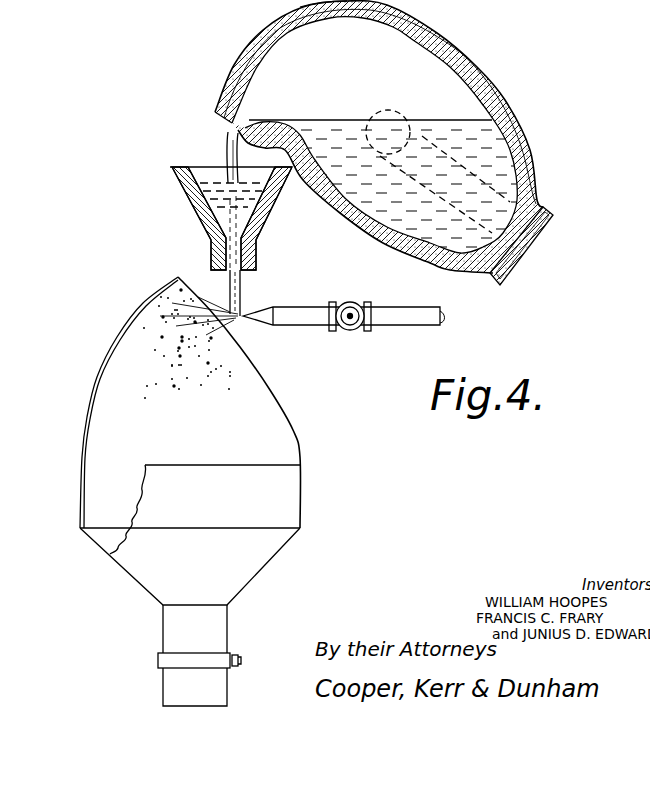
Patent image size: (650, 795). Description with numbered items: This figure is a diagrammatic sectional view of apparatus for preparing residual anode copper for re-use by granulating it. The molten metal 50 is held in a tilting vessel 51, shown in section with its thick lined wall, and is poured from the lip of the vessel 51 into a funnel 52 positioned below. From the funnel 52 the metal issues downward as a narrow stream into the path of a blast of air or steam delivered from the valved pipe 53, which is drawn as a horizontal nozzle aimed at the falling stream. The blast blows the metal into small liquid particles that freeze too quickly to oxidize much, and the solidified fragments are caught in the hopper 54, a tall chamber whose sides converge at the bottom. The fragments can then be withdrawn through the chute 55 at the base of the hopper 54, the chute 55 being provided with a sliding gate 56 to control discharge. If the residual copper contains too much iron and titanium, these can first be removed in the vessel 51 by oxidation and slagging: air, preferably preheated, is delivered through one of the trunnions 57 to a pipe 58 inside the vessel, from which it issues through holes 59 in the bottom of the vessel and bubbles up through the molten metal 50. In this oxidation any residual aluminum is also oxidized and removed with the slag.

The molten metal 50 is at (333, 129).
The vessel 51 is at (233, 75).
The funnel 52 is at (292, 6).
The valved pipe 53 is at (313, 323).
The hopper 54 is at (112, 383).
The chute 55 is at (168, 629).
The sliding gate 56 is at (241, 656).
The trunnion 57 is at (387, 117).
The pipe 58 is at (456, 148).
The holes 59 is at (541, 199).